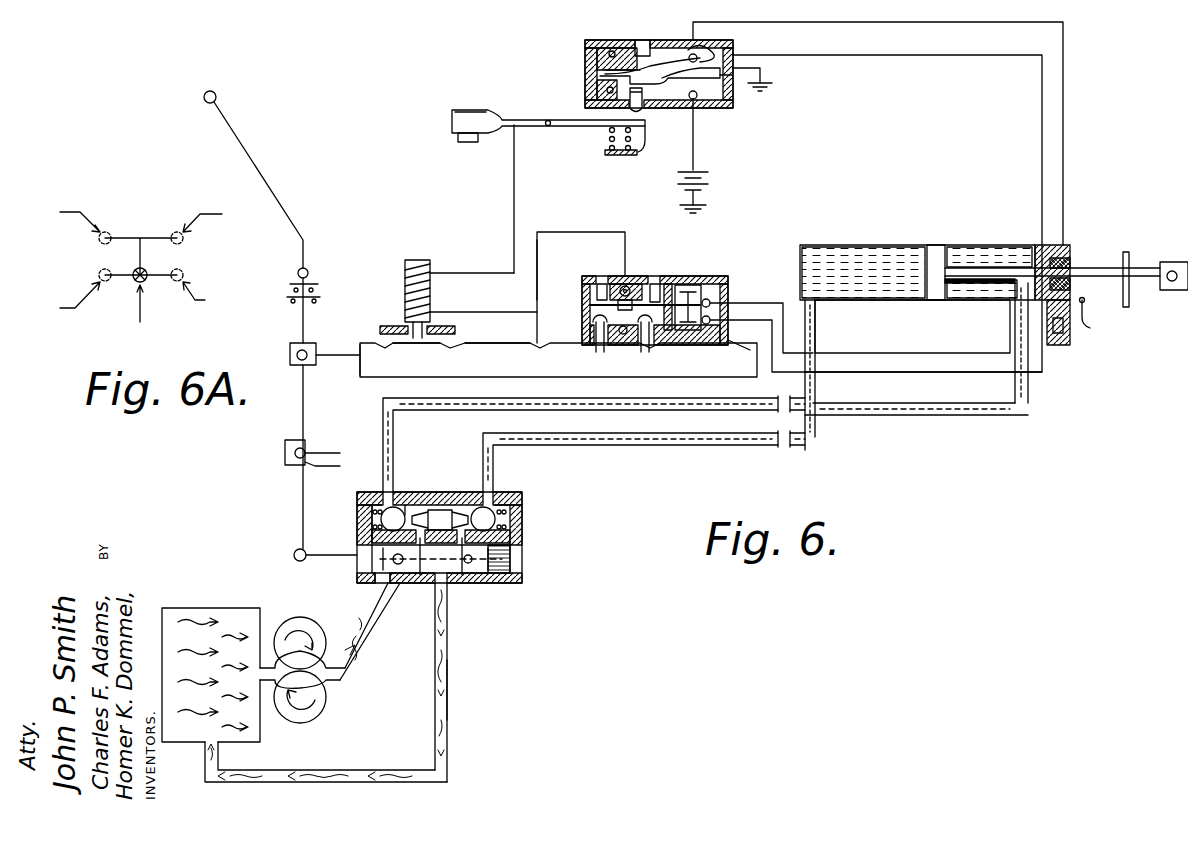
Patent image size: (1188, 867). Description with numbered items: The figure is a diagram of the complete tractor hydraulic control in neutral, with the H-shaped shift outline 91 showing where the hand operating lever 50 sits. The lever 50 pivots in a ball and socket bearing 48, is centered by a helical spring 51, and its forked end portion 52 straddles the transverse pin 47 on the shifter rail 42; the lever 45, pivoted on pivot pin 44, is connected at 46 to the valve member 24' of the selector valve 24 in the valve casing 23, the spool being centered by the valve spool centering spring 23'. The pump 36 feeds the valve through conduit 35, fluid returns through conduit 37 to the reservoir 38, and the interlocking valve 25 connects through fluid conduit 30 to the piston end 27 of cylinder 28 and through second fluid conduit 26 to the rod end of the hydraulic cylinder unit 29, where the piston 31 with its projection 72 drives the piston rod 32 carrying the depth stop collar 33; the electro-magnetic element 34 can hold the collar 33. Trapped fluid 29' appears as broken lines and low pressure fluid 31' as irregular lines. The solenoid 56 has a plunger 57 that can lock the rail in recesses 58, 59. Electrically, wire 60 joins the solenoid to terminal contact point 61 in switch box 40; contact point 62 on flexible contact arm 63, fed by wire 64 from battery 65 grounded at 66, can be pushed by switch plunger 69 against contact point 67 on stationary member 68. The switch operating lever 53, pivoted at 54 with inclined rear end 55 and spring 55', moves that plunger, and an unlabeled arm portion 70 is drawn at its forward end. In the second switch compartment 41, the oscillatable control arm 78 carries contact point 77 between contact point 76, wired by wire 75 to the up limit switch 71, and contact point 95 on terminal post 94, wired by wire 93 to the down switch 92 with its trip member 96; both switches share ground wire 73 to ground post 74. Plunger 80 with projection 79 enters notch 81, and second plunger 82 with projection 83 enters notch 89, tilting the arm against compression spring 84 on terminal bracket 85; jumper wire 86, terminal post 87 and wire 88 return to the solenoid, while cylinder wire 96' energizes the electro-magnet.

In FIG. 6, the valve casing 23 is at (468, 537).
In FIG. 6, the valve spool centering spring 23' is at (476, 557).
In FIG. 6, the selector valve 24 is at (462, 682).
In FIG. 6, the valve member 24' is at (395, 601).
In FIG. 6, the interlocking valve 25 is at (440, 508).
In FIG. 6, the second fluid conduit 26 is at (698, 416).
In FIG. 6, the piston end 27 is at (815, 312).
In FIG. 6, the cylinder 28 is at (845, 248).
In FIG. 6, the hydraulic cylinder unit 29 is at (866, 230).
In FIG. 6, the trapped fluid 29' is at (916, 327).
In FIG. 6, the fluid conduit 30 is at (688, 450).
In FIG. 6, the piston 31 is at (947, 253).
In FIG. 6, the low pressure fluid 31' is at (359, 752).
In FIG. 6, the piston rod 32 is at (1078, 268).
In FIG. 6, the depth stop collar 33 is at (1128, 258).
In FIG. 6, the electro-magnetic element 34 is at (1070, 245).
In FIG. 6, the conduit 35 is at (390, 625).
In FIG. 6, the pump 36 is at (331, 710).
In FIG. 6, the conduit 37 is at (447, 695).
In FIG. 6, the fluid reservoir 38 is at (212, 608).
In FIG. 6, the switch box 40 is at (712, 108).
In FIG. 6, the second switch compartment 41 is at (580, 330).
In FIG. 6, the shifter rail 42 is at (505, 338).
In FIG. 6, the pivot pin 44 is at (305, 452).
In FIG. 6, the lever 45 is at (300, 410).
In FIG. 6, the pivotal connection 46 is at (294, 557).
In FIG. 6, the transverse pin 47 is at (298, 362).
In FIG. 6, the ball and socket bearing 48 is at (310, 268).
In FIG. 6A, the hand operating lever 50 is at (133, 279).
In FIG. 6, the helical spring 51 is at (320, 290).
In FIG. 6, the forked end portion 52 is at (290, 350).
In FIG. 6, the switch operating lever 53 is at (500, 115).
In FIG. 6, the pivot 54 is at (548, 127).
In FIG. 6, the inclined rear end 55 is at (459, 91).
In FIG. 6, the spring 55' is at (604, 146).
In FIG. 6, the solenoid 56 is at (397, 293).
In FIG. 6, the plunger 57 is at (440, 330).
In FIG. 6, the recess 58 is at (365, 352).
In FIG. 6, the recess 59 is at (445, 350).
In FIG. 6, the wire 60 is at (514, 190).
In FIG. 6, the terminal contact point 61 is at (597, 86).
In FIG. 6, the contact point 62 is at (600, 70).
In FIG. 6, the flexible contact arm 63 is at (650, 40).
In FIG. 6, the wire 64 is at (693, 148).
In FIG. 6, the battery 65 is at (708, 178).
In FIG. 6, the ground 66 is at (706, 207).
In FIG. 6, the contact point 67 is at (585, 52).
In FIG. 6, the stationary member 68 is at (686, 52).
In FIG. 6, the switch plunger 69 is at (645, 112).
In FIG. 6, the lever arm 70 is at (642, 150).
In FIG. 6, the up limit switch 71 is at (1012, 295).
In FIG. 6, the projection 72 is at (955, 280).
In FIG. 6, the ground wire 73 is at (835, 60).
In FIG. 6, the ground post 74 is at (720, 42).
In FIG. 6, the wire 75 is at (885, 352).
In FIG. 6, the contact point 76 is at (690, 290).
In FIG. 6, the contact point 77 is at (712, 300).
In FIG. 6, the oscillatable control arm 78 is at (668, 290).
In FIG. 6, the projection 79 is at (655, 282).
In FIG. 6, the plunger 80 is at (645, 350).
In FIG. 6, the notch 81 is at (650, 335).
In FIG. 6, the second plunger 82 is at (600, 350).
In FIG. 6, the projection 83 is at (590, 304).
In FIG. 6, the compression spring 84 is at (628, 285).
In FIG. 6, the terminal bracket 85 is at (615, 280).
In FIG. 6, the jumper wire 86 is at (597, 290).
In FIG. 6, the terminal post 87 is at (618, 285).
In FIG. 6, the wire 88 is at (537, 265).
In FIG. 6, the notch 89 is at (560, 360).
In FIG. 6A, the H-shaped shift outline 91 is at (143, 220).
In FIG. 6, the down switch 92 is at (1072, 330).
In FIG. 6, the wire 93 is at (908, 372).
In FIG. 6, the terminal post 94 is at (712, 324).
In FIG. 6, the contact point 95 is at (728, 345).
In FIG. 6, the trip member 96 is at (1098, 318).
In FIG. 6, the cylinder wire 96' is at (878, 133).